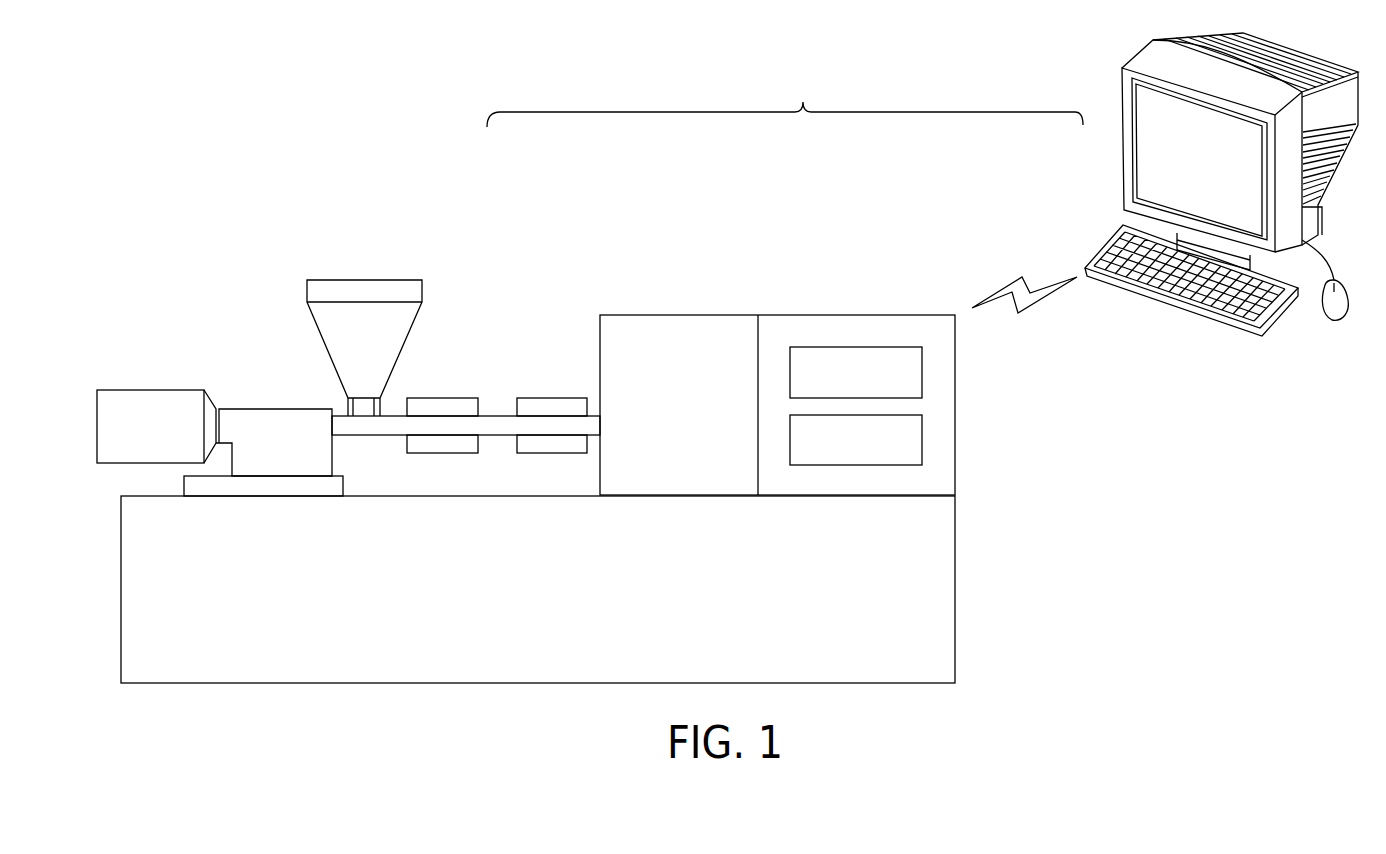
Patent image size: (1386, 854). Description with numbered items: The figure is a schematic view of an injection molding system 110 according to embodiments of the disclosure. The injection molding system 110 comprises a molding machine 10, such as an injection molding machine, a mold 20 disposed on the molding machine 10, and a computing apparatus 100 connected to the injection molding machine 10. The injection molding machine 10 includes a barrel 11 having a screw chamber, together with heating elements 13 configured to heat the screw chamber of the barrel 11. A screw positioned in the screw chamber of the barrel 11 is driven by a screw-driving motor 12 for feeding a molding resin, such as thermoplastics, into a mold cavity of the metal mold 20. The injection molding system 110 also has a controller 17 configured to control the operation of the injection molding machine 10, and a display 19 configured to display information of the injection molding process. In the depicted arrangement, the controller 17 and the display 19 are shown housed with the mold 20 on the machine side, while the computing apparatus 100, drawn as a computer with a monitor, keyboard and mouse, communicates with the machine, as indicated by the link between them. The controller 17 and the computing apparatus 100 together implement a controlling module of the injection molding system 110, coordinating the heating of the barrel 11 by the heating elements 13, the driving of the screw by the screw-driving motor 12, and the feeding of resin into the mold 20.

The molding machine 10 is at (475, 199).
The barrel 11 is at (500, 416).
The screw-driving motor 12 is at (148, 400).
The heating elements 13 is at (553, 398).
The controller 17 is at (922, 440).
The display 19 is at (922, 372).
The mold 20 is at (680, 315).
The computing apparatus 100 is at (1122, 136).
The injection molding system 110 is at (785, 99).